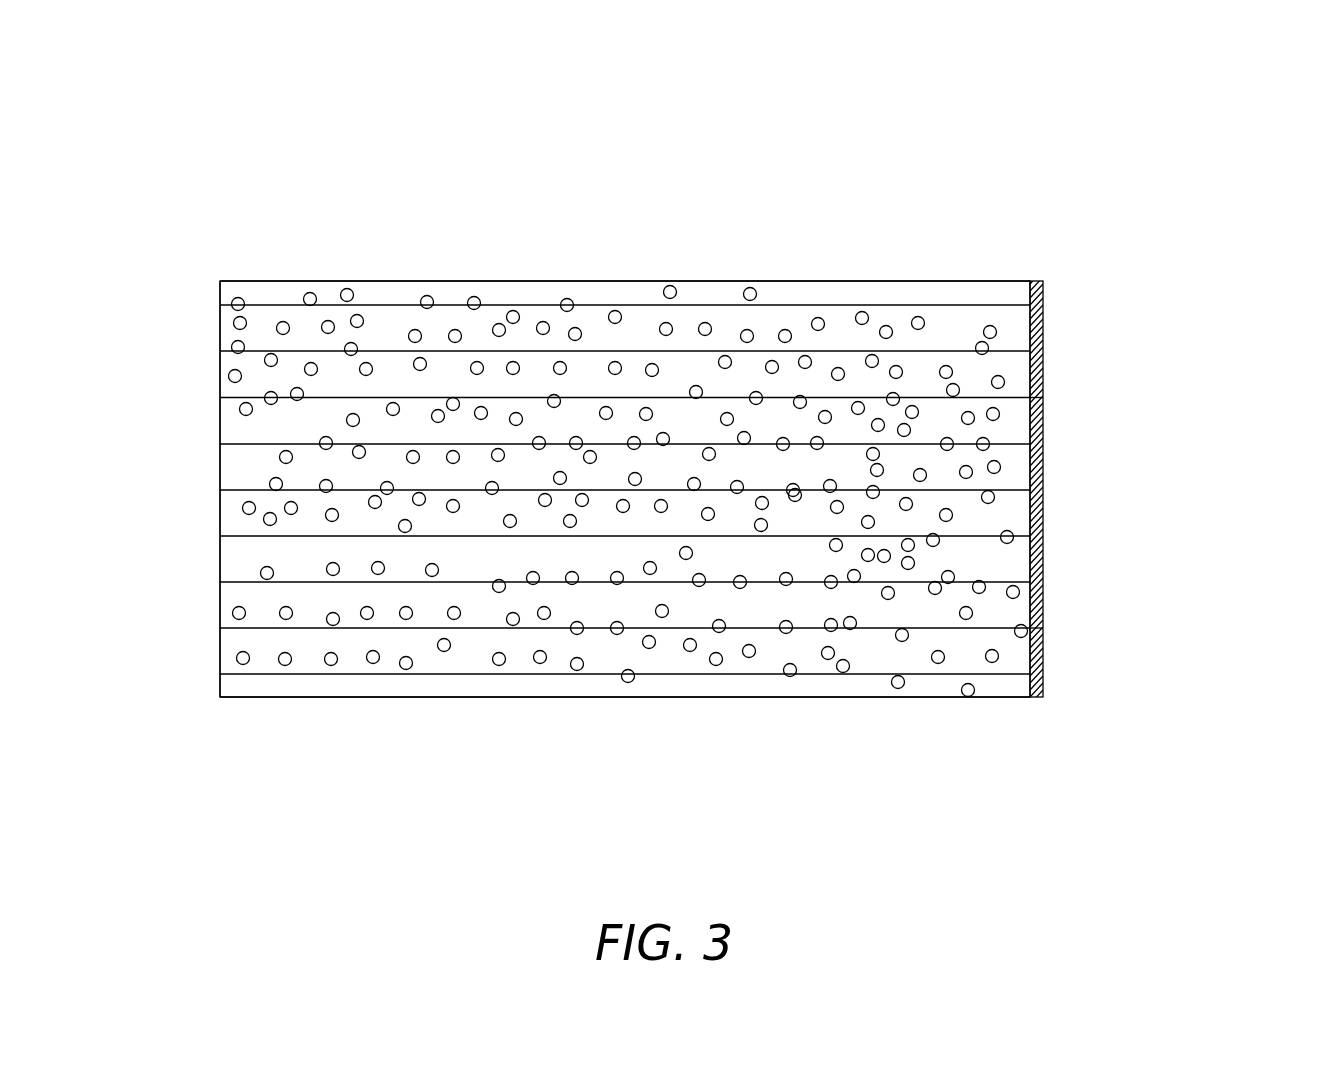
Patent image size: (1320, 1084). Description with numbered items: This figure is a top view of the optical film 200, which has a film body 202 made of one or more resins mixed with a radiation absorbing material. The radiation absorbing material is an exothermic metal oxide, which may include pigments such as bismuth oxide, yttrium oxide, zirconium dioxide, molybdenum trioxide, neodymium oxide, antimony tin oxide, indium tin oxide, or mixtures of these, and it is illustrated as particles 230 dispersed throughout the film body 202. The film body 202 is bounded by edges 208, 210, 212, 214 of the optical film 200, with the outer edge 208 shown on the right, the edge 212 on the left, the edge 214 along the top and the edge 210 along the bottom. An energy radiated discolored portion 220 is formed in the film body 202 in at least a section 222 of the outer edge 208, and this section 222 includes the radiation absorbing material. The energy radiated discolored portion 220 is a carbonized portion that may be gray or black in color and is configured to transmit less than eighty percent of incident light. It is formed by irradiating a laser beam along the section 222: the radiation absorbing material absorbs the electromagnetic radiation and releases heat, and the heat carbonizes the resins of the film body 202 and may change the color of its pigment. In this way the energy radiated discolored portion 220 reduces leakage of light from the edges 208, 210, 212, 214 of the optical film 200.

The optical film 200 is at (1197, 84).
The film body 202 is at (1081, 280).
The outer edge 208 is at (1056, 519).
The edge 210 is at (610, 710).
The edge 212 is at (207, 511).
The edge 214 is at (790, 268).
The energy radiated discolored portion 220 is at (1043, 403).
The section 222 is at (1074, 630).
The particles 230 is at (705, 329).